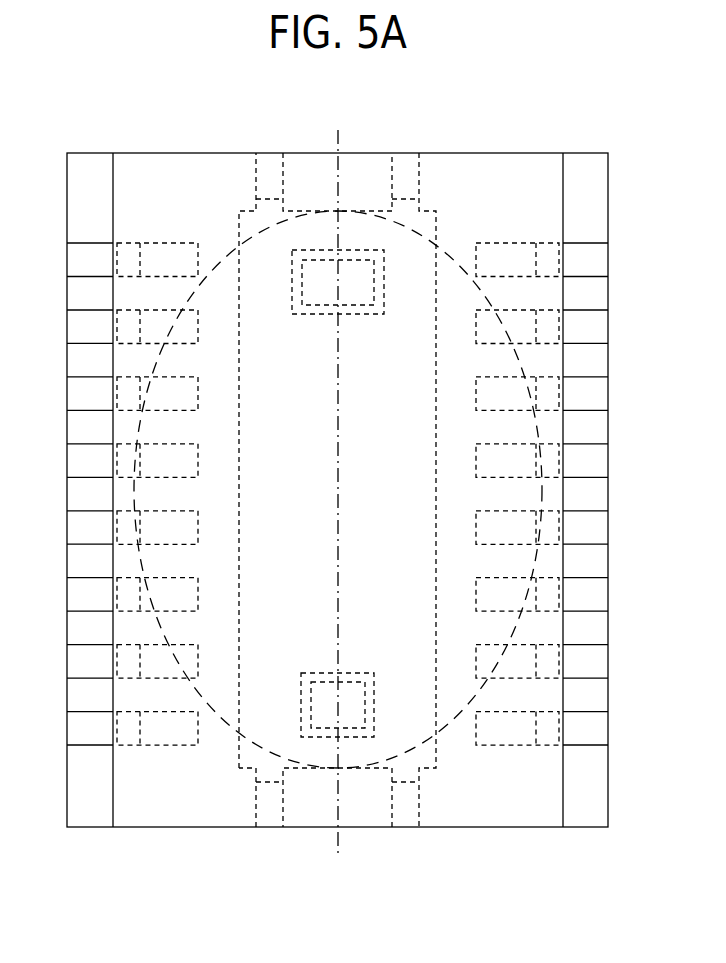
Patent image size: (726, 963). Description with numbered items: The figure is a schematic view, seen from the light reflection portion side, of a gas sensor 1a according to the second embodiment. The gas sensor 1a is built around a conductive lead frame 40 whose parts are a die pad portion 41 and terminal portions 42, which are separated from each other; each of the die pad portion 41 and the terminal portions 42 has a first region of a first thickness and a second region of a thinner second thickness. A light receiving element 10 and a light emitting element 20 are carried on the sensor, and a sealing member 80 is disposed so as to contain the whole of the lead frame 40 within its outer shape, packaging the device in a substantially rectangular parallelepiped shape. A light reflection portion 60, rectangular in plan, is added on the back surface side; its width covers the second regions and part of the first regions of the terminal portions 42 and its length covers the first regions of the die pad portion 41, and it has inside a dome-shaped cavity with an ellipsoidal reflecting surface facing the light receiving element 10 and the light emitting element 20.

The gas sensor 1a is at (578, 129).
The light receiving element 10 is at (354, 702).
The light emitting element 20 is at (352, 282).
The conductive lead frame 40 is at (187, 887).
The die pad portion 41 is at (423, 220).
The terminal portions 42 is at (88, 253).
The light reflection portion 60 is at (521, 787).
The sealing member 80 is at (583, 787).